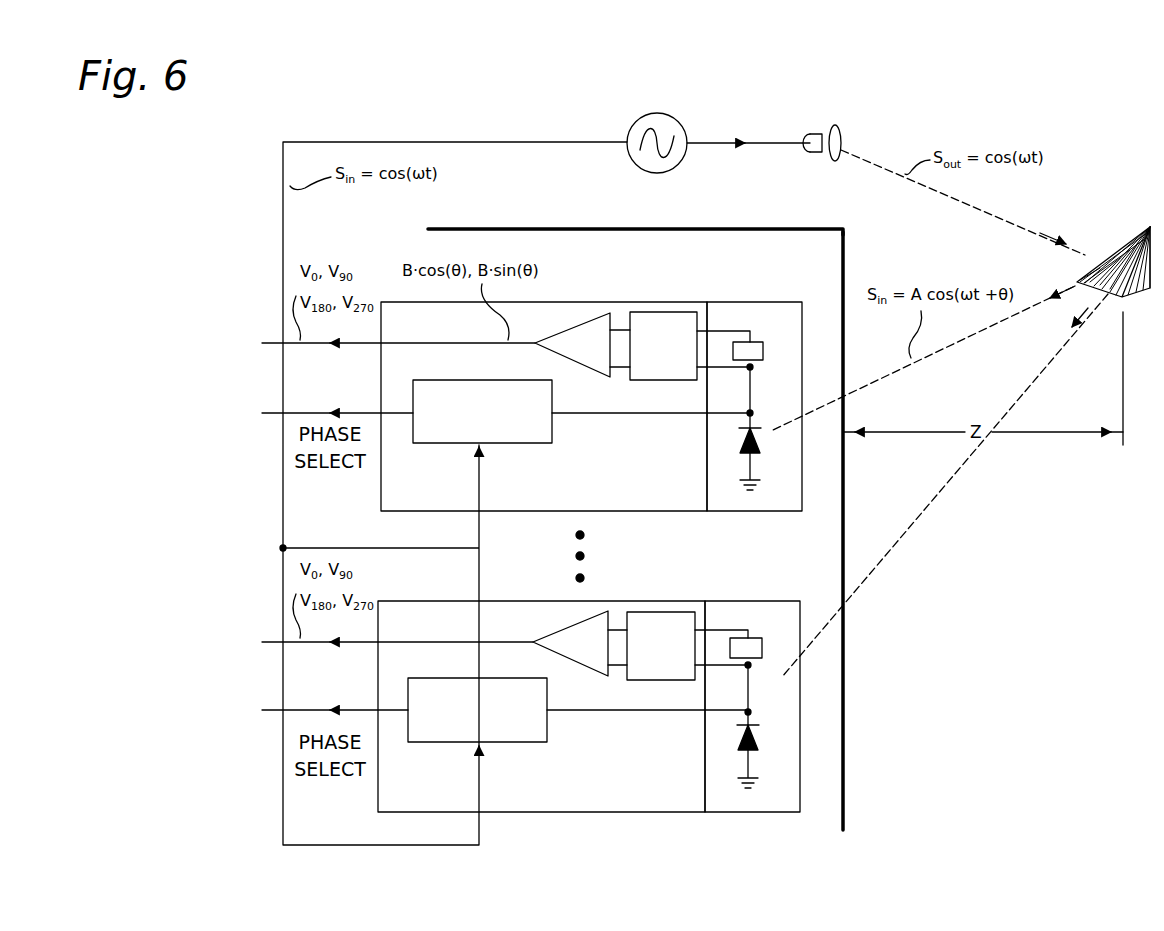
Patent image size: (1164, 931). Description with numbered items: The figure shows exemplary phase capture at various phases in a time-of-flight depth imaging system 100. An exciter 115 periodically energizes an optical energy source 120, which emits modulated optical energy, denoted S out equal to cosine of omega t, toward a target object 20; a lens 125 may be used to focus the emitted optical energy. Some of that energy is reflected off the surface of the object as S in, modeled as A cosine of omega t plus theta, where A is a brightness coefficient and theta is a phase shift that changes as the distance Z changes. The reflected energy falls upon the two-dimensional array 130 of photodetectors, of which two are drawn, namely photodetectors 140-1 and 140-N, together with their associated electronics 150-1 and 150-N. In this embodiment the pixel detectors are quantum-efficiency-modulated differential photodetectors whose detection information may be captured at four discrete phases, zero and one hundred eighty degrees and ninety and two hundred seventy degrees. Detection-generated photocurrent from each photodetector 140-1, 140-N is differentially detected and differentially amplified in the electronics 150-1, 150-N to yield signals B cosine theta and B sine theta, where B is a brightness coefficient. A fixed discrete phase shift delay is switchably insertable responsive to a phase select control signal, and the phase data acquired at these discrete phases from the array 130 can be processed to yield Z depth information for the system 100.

The target object 20 is at (1112, 233).
The depth imaging system 100 is at (853, 226).
The exciter 115 is at (668, 160).
The optical energy source 120 is at (818, 155).
The lens 125 is at (807, 127).
The two-dimensional array 130 is at (846, 726).
The photodetector 140-1 is at (729, 302).
The photodetector 140-N is at (727, 601).
The associated electronics 150-1 is at (647, 302).
The associated electronics 150-N is at (640, 601).